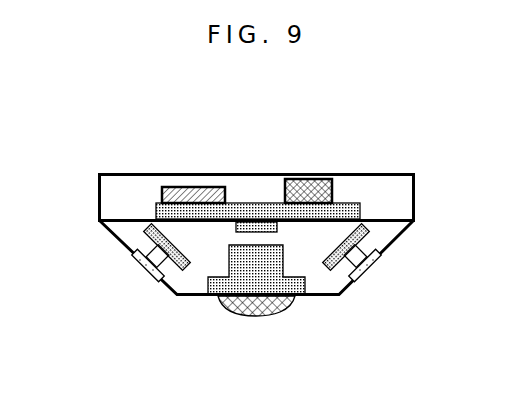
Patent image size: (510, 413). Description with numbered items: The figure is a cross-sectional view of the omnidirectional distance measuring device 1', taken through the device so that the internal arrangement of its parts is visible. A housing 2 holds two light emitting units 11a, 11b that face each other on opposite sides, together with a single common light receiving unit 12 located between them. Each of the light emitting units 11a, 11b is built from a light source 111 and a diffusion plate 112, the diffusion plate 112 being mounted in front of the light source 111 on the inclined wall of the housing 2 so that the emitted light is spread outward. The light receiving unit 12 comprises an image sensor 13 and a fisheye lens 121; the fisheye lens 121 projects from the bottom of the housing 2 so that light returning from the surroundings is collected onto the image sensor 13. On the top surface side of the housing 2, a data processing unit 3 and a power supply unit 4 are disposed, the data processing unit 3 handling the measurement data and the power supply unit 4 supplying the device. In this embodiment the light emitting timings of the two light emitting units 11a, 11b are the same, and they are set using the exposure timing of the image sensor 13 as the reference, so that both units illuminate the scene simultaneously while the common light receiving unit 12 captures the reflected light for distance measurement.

The omnidirectional distance measuring device 1' is at (246, 251).
The housing 2 is at (415, 192).
The data processing unit 3 is at (206, 187).
The power supply unit 4 is at (311, 179).
The light emitting unit 11a is at (111, 282).
The light emitting unit 11b is at (370, 275).
The light source 111 is at (155, 257).
The diffusion plate 112 is at (142, 274).
The light receiving unit 12 is at (265, 321).
The fisheye lens 121 is at (256, 329).
The image sensor 13 is at (277, 228).